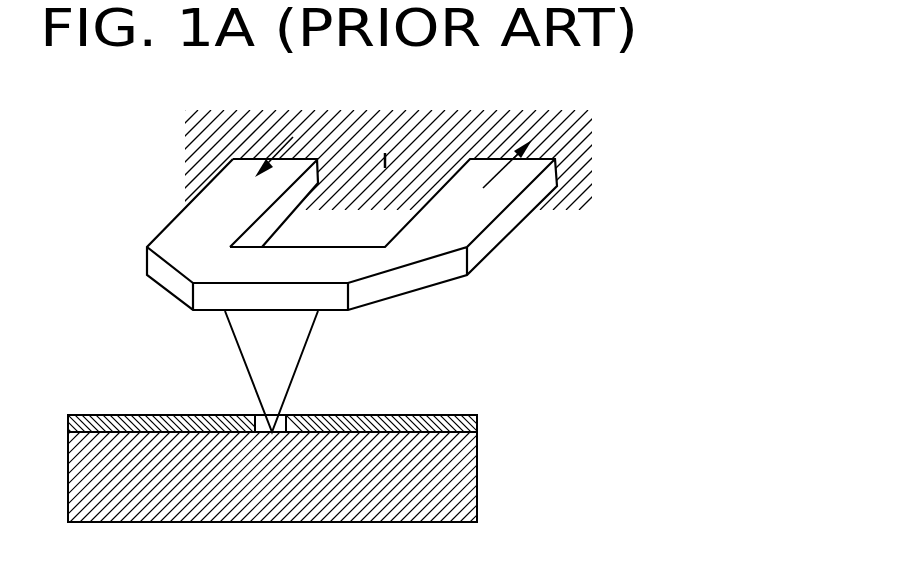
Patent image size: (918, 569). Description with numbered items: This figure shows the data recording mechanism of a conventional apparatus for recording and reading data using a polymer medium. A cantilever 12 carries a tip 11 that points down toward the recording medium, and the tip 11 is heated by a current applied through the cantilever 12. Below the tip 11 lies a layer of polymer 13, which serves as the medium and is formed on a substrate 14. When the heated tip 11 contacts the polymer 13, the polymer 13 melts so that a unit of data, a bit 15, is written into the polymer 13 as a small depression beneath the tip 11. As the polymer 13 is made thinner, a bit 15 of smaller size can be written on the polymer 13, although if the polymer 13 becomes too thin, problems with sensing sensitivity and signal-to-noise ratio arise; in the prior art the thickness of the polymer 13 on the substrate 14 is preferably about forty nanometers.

The tip 11 is at (298, 347).
The cantilever 12 is at (493, 236).
The polymer 13 is at (472, 426).
The substrate 14 is at (457, 478).
The bit 15 is at (280, 423).